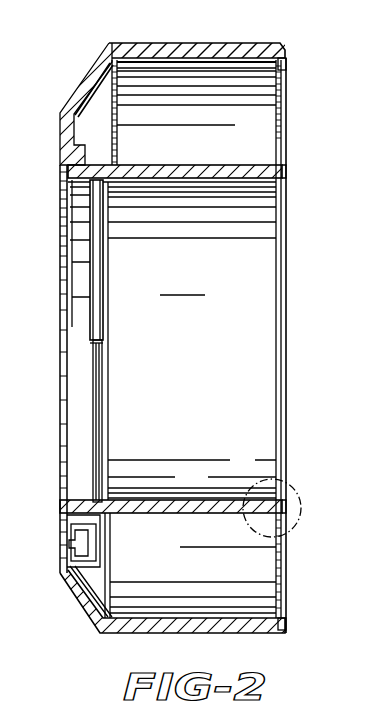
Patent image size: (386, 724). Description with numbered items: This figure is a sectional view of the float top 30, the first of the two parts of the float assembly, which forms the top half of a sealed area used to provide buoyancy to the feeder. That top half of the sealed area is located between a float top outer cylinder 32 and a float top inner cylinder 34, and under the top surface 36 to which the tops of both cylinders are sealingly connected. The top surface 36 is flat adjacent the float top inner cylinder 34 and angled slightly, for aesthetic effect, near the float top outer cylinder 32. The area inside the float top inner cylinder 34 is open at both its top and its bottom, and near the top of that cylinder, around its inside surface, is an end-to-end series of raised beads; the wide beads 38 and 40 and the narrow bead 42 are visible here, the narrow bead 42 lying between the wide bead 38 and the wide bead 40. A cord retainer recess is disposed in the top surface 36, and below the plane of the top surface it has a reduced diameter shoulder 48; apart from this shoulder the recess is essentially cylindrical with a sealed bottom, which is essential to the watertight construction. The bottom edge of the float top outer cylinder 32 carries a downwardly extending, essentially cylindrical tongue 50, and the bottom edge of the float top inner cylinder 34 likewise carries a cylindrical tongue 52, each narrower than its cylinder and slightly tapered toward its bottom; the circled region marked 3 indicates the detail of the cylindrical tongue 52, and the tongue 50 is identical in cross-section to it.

The float top 30 is at (77, 617).
The float top outer cylinder 32 is at (267, 21).
The float top inner cylinder 34 is at (226, 141).
The top surface 36 is at (60, 113).
The wide bead 38 is at (108, 308).
The wide bead 40 is at (84, 546).
The narrow bead 42 is at (104, 428).
The reduced diameter shoulder 48 is at (62, 541).
The cylindrical tongue 50 is at (285, 55).
The cylindrical tongue 52 is at (284, 170).
The detail area of FIG. 3 is at (253, 497).